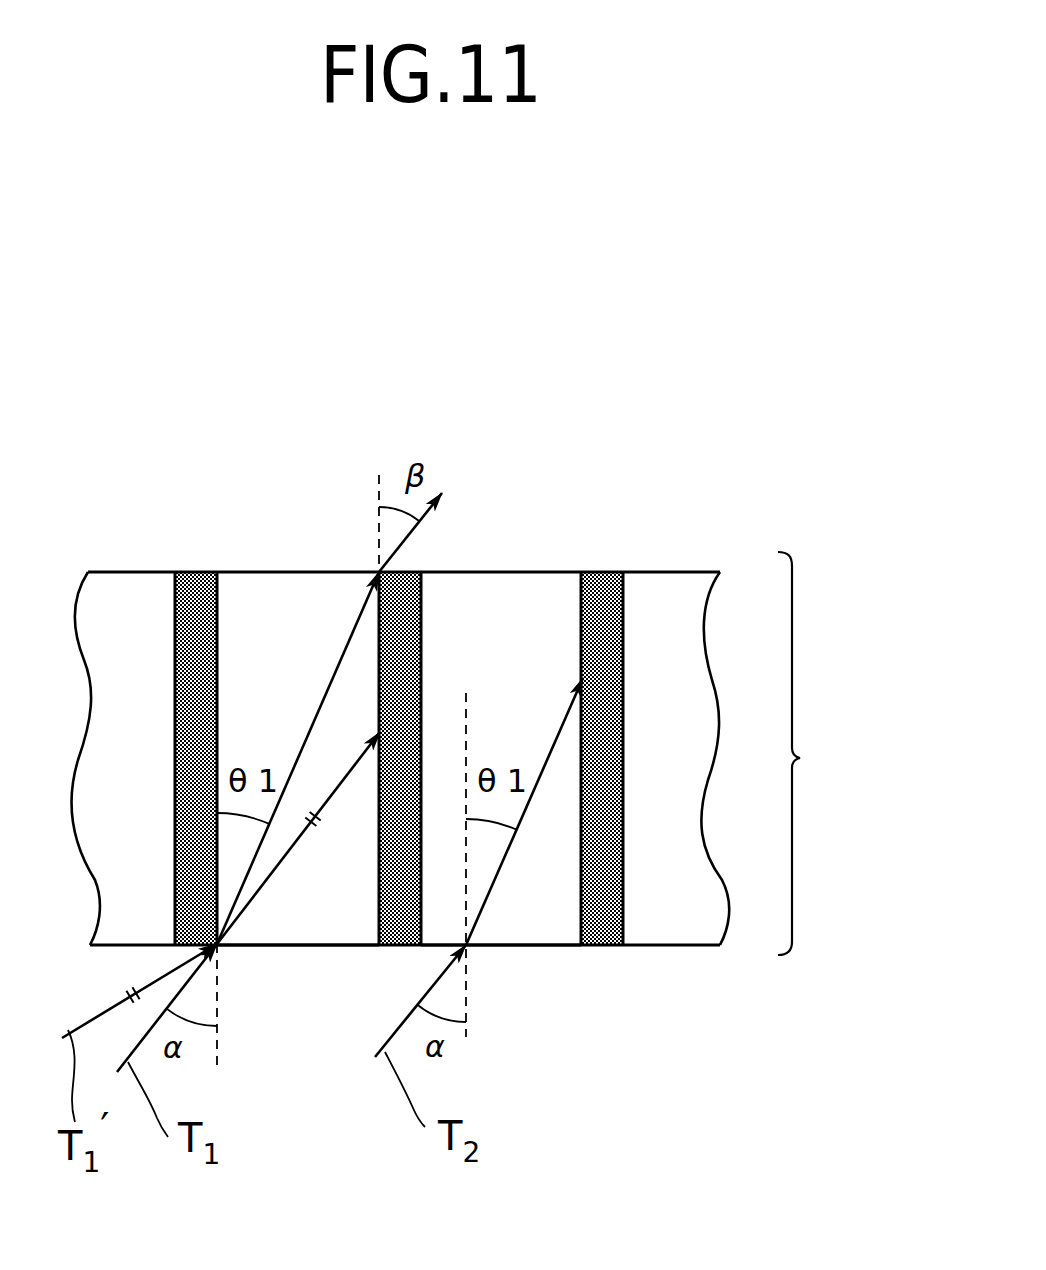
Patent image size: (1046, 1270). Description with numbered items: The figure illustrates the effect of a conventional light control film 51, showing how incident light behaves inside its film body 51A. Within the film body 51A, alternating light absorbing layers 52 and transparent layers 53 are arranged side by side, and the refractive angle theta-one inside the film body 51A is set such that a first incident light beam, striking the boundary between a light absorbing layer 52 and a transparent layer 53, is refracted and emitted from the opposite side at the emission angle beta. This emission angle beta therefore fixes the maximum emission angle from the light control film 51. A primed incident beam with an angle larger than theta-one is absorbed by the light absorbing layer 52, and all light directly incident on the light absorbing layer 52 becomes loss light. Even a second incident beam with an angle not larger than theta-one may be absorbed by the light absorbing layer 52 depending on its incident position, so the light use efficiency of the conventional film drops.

The light control film 51 is at (728, 502).
The film body 51A is at (838, 753).
The light absorbing layer 52 is at (200, 572).
The transparent layer 53 is at (303, 923).